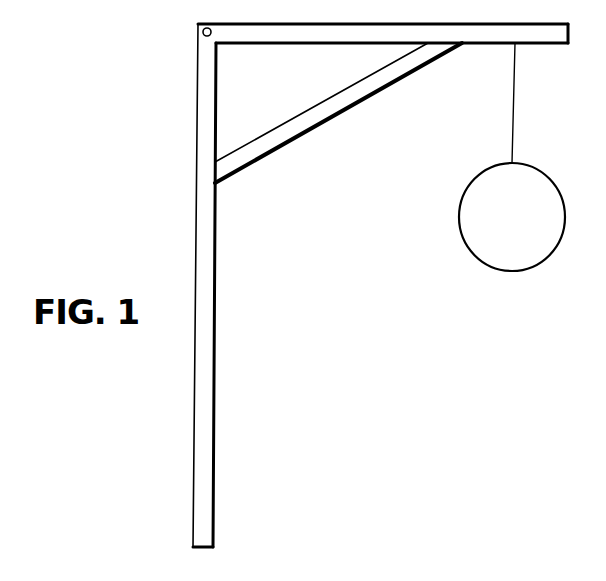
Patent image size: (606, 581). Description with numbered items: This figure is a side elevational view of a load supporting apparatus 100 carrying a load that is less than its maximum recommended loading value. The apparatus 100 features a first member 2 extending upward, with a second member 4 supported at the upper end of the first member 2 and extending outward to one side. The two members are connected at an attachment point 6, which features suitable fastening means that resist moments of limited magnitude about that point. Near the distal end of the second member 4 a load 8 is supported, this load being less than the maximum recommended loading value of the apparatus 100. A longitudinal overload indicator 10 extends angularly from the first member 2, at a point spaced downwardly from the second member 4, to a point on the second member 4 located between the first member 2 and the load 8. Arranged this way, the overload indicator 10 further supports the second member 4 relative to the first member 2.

The load supporting apparatus 100 is at (314, 290).
The first member 2 is at (196, 247).
The second member 4 is at (299, 31).
The attachment point 6 is at (203, 32).
The load 8 is at (506, 250).
The longitudinal overload indicator 10 is at (304, 145).